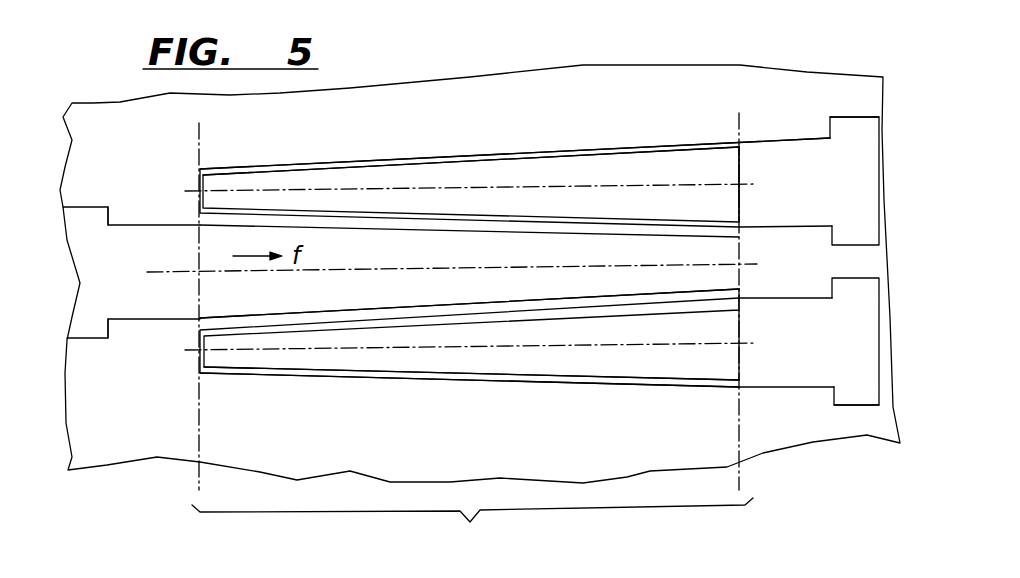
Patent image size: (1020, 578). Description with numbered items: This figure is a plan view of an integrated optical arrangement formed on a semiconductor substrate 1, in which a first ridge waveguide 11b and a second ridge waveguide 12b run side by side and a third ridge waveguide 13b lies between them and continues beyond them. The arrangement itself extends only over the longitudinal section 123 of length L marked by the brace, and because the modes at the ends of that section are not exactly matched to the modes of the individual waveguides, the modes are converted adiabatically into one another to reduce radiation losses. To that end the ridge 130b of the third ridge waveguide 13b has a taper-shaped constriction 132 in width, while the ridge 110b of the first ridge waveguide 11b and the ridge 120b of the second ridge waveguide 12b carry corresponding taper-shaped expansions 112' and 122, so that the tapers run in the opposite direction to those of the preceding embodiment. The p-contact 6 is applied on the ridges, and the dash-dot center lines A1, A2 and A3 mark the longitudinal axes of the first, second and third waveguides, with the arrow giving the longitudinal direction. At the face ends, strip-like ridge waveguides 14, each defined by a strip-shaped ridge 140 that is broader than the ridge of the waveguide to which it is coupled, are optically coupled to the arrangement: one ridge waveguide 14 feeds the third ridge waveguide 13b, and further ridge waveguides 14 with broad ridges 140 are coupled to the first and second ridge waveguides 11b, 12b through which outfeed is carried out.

The substrate 1 is at (715, 65).
The p-contact 6 is at (292, 186).
The first ridge waveguide 11b is at (572, 150).
The ridge of first ridge waveguide 110b is at (400, 158).
The taper-shaped expansion 112' is at (515, 122).
The second ridge waveguide 12b is at (535, 388).
The ridge of second ridge waveguide 120b is at (468, 382).
The taper-shaped expansion 122 is at (653, 380).
The third ridge waveguide 13b is at (258, 317).
The ridge of third ridge waveguide 130b is at (303, 312).
The taper-shaped constriction 132 is at (739, 249).
The strip-like ridge waveguide 14 is at (83, 205).
The strip-shaped ridge 140 is at (85, 343).
The longitudinal section 123 is at (472, 526).
The axis of first blade A1 is at (598, 178).
The axis of second blade A2 is at (598, 353).
The central axis A3 is at (313, 273).